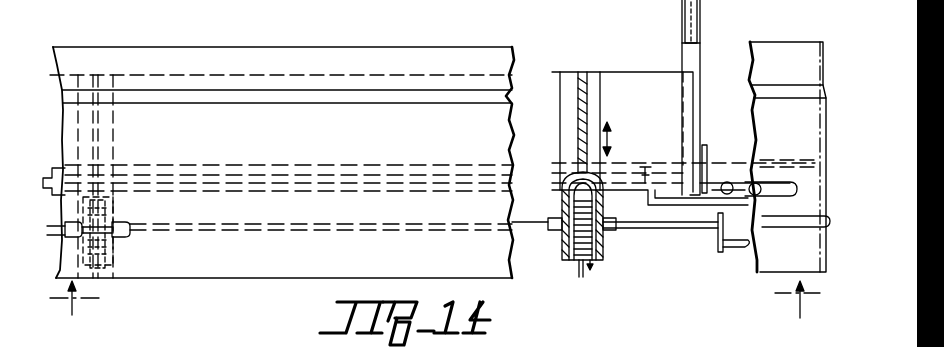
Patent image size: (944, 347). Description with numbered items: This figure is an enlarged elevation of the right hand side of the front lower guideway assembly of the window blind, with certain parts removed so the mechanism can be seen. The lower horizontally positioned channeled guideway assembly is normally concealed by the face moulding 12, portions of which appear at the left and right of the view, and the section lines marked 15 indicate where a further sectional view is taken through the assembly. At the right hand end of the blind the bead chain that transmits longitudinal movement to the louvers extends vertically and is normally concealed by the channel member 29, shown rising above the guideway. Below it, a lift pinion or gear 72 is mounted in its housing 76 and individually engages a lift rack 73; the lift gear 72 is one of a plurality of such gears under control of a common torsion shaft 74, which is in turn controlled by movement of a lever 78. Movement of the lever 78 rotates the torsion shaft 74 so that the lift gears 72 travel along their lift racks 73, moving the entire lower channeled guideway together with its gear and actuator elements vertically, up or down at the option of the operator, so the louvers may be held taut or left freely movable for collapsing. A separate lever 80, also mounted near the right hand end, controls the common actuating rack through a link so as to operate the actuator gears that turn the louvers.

The face moulding 12 is at (360, 45).
The section line 15 is at (435, 314).
The channel member 29 is at (682, 22).
The lift pinion 72 is at (574, 229).
The lift rack 73 is at (580, 280).
The torsion shaft 74 is at (677, 225).
The housing 76 is at (603, 248).
The lever 78 is at (735, 252).
The lever 80 is at (770, 192).